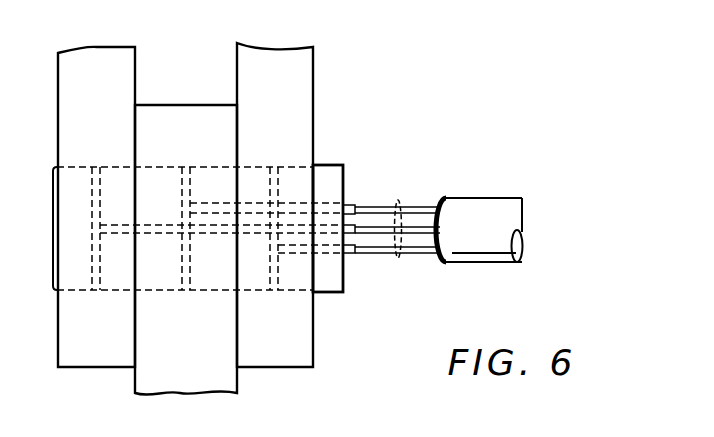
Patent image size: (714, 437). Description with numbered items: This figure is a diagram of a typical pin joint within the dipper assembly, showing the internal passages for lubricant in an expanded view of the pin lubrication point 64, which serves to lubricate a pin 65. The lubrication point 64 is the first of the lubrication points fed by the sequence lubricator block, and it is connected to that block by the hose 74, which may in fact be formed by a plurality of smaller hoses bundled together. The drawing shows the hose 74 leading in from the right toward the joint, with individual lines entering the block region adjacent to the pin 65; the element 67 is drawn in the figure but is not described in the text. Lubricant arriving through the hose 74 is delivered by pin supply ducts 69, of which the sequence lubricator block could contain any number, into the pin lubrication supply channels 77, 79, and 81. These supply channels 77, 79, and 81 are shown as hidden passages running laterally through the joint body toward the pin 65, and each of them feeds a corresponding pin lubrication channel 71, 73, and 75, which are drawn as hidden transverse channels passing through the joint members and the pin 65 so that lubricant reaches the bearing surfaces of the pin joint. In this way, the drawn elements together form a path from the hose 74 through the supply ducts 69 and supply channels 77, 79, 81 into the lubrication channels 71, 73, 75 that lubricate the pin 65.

The first lubrication point 64 is at (385, 60).
The pin 65 is at (330, 165).
The housing 67 is at (263, 219).
The pin supply ducts 69 is at (400, 258).
The pin lubrication channel 71 is at (273, 165).
The pin lubrication channel 73 is at (183, 285).
The hose 74 is at (473, 205).
The pin lubrication channel 75 is at (93, 167).
The pin lubrication supply channel 77 is at (326, 253).
The pin lubrication supply channel 79 is at (211, 203).
The pin lubrication supply channel 81 is at (112, 233).